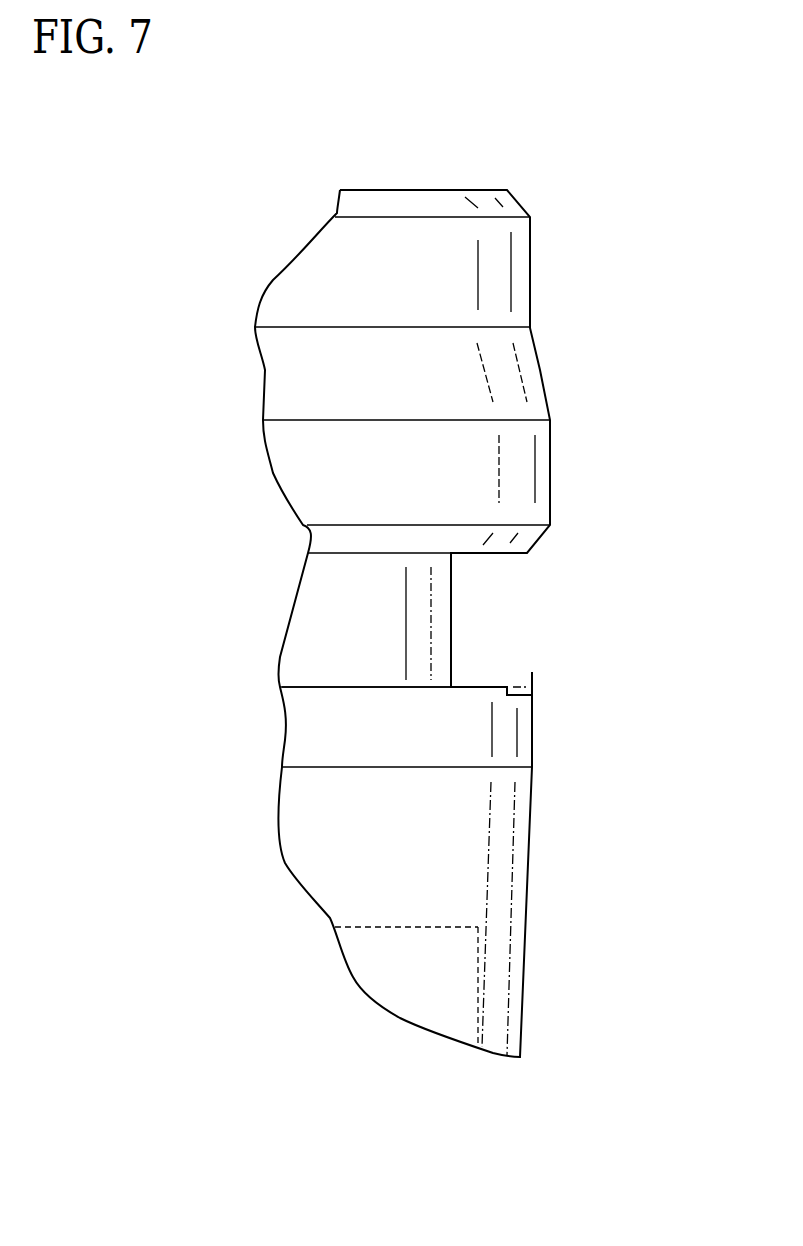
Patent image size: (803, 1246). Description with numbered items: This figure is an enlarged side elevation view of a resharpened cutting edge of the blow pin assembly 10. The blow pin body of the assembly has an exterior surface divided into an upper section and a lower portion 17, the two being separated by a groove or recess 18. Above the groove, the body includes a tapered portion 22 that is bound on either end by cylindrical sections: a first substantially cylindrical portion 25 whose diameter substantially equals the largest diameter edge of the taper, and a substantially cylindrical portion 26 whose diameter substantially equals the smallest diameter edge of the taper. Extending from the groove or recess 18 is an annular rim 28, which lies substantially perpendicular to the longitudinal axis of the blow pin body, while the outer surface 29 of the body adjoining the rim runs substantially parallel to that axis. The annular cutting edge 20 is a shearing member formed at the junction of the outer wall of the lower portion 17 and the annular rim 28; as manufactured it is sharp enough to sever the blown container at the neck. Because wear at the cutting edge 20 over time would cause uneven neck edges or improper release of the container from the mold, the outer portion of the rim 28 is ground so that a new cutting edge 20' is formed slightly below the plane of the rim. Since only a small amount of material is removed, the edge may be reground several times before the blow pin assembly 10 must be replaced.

The blow pin assembly 10 is at (248, 946).
The lower portion 17 is at (322, 725).
The groove or recess 18 is at (451, 593).
The annular cutting edge 20 is at (594, 675).
The new cutting edge 20' is at (601, 719).
The tapered portion 22 is at (467, 387).
The first substantially cylindrical portion 25 is at (323, 475).
The substantially cylindrical portion 26 is at (500, 290).
The annular rim 28 is at (487, 685).
The outer surface 29 is at (368, 710).